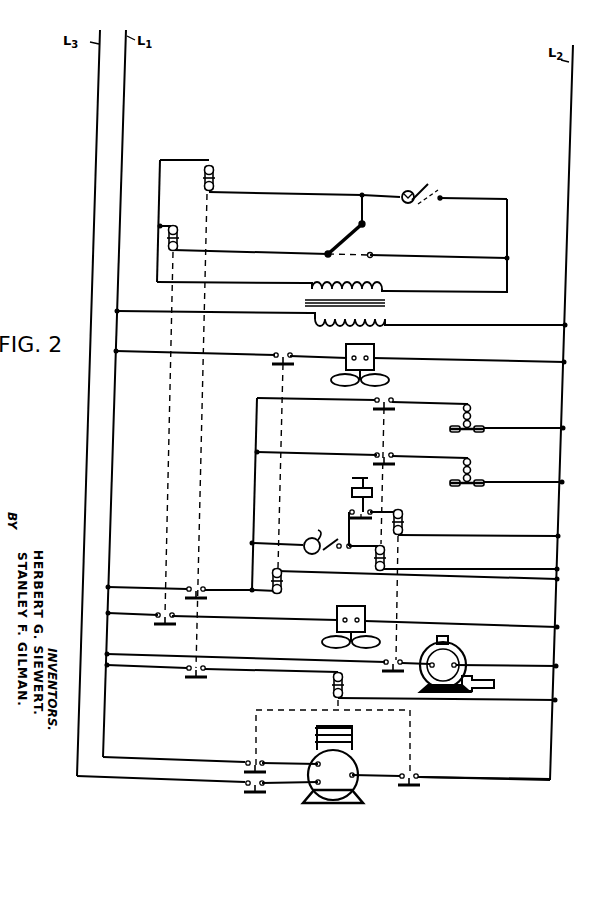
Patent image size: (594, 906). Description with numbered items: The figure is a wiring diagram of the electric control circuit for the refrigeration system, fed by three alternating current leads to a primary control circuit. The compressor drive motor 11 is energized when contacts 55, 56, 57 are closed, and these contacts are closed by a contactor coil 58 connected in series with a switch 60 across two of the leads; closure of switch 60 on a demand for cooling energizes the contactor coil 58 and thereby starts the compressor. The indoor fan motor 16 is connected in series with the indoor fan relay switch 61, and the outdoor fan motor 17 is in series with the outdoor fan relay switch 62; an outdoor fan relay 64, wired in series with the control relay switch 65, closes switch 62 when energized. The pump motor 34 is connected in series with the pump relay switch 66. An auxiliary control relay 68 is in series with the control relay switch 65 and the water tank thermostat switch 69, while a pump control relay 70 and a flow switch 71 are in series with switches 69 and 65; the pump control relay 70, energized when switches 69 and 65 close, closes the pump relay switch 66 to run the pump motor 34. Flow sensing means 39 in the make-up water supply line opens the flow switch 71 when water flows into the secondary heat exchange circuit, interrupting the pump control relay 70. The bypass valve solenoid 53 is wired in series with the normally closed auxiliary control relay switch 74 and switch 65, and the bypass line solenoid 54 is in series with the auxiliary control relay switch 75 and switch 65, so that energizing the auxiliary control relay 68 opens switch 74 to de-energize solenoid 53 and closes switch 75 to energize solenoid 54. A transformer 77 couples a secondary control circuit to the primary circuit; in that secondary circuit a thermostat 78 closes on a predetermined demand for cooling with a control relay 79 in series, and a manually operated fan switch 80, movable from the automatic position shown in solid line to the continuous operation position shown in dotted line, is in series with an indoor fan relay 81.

The compressor drive motor 11 is at (333, 764).
The indoor fan motor 16 is at (351, 619).
The outdoor fan motor 17 is at (373, 347).
The pump motor 34 is at (456, 650).
The flow sensing means 39 is at (352, 493).
The bypass valve solenoid 53 is at (470, 408).
The bypass line solenoid 54 is at (470, 465).
The contact 55 is at (246, 765).
The contact 56 is at (412, 787).
The contact 57 is at (246, 790).
The contactor coil 58 is at (332, 687).
The switch 60 is at (195, 681).
The indoor fan relay switch 61 is at (170, 624).
The outdoor fan relay switch 62 is at (282, 347).
The outdoor fan relay 64 is at (284, 582).
The control relay switch 65 is at (204, 597).
The pump relay switch 66 is at (392, 672).
The auxiliary control relay 68 is at (377, 560).
The water tank thermostat switch 69 is at (315, 537).
The pump control relay 70 is at (404, 522).
The flow switch 71 is at (361, 526).
The auxiliary control relay switch 74 is at (388, 399).
The auxiliary control relay switch 75 is at (387, 453).
The transformer 77 is at (398, 305).
The thermostat 78 is at (428, 184).
The control relay 79 is at (215, 182).
The fan switch 80 is at (348, 238).
The indoor fan relay 81 is at (178, 238).